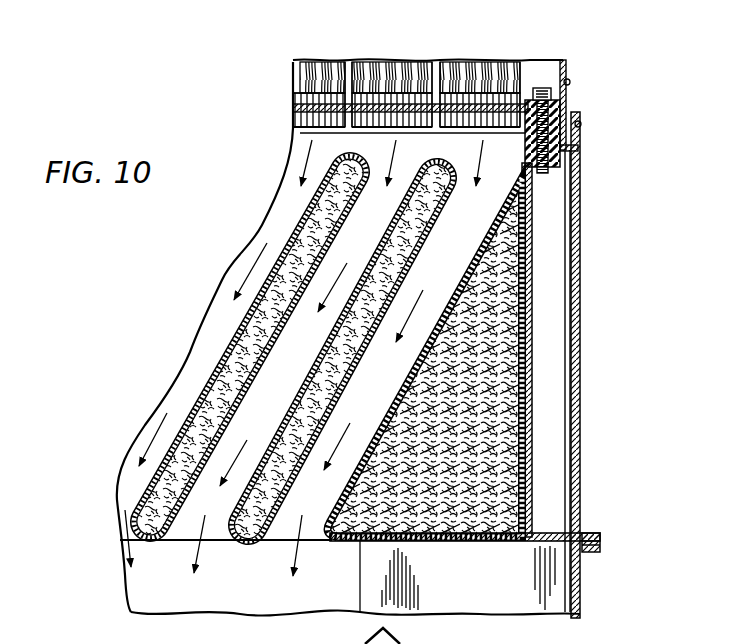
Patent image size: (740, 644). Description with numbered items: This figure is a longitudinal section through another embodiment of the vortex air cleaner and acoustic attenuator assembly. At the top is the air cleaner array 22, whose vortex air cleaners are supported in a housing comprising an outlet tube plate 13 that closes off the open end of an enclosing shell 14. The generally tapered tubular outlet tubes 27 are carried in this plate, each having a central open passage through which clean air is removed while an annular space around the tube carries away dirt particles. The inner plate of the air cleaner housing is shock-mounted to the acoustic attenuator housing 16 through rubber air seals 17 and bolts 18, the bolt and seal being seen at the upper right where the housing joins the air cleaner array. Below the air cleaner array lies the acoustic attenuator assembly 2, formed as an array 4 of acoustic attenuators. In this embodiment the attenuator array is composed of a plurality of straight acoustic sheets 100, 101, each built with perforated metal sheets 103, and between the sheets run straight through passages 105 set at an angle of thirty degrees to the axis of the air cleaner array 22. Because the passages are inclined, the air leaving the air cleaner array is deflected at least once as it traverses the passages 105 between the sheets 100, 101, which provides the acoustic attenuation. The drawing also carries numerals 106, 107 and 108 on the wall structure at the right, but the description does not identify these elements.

The acoustic attenuator assembly 2 is at (549, 532).
The array of acoustic attenuators 4 is at (588, 530).
The outlet tube plate 13 is at (298, 112).
The enclosing shell 14 is at (552, 96).
The acoustic attenuator housing 16 is at (600, 365).
The rubber air seal 17 is at (528, 130).
The bolt 18 is at (540, 90).
The air cleaner array 22 is at (389, 87).
The outlet tube 27 is at (472, 66).
The straight acoustic sheet 100 is at (296, 222).
The straight acoustic sheet 101 is at (425, 357).
The perforated metal sheet 103 is at (388, 246).
The straight through passage 105 is at (465, 252).
The inner wall 106 is at (533, 308).
The flange 107 is at (560, 160).
The outer wall 108 is at (580, 370).